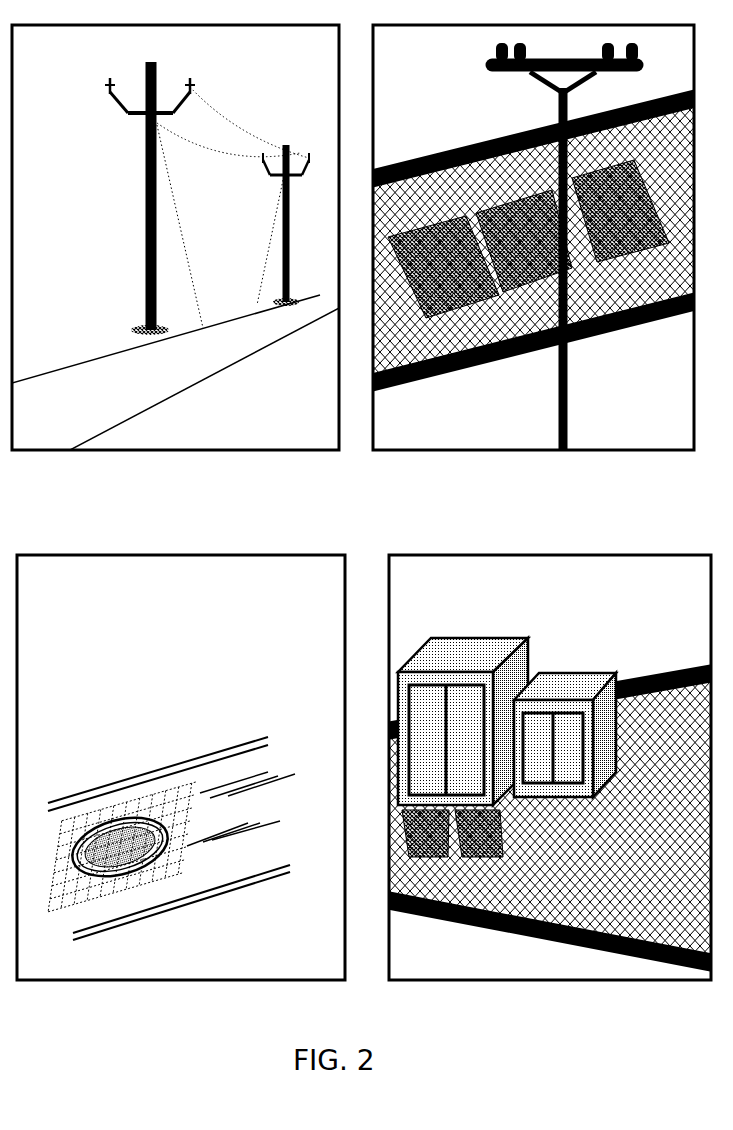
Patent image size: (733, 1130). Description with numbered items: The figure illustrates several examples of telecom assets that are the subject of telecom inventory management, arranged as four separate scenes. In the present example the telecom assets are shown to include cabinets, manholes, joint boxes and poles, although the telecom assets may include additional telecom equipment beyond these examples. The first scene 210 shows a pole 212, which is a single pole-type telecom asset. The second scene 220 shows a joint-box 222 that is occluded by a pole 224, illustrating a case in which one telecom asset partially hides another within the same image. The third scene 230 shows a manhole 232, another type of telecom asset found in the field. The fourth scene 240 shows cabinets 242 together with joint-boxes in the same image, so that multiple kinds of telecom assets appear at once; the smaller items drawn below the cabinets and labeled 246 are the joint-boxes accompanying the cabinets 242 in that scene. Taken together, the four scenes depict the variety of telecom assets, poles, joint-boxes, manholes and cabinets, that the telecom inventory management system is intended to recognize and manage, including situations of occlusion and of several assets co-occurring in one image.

The scene 210 is at (175, 267).
The pole 212 is at (157, 70).
The scene 220 is at (533, 267).
The joint-box 222 is at (399, 236).
The pole 224 is at (494, 62).
The scene 230 is at (181, 802).
The manhole 232 is at (98, 823).
The scene 240 is at (550, 798).
The cabinets 242 is at (466, 637).
The small panels behind fence 246 is at (433, 860).